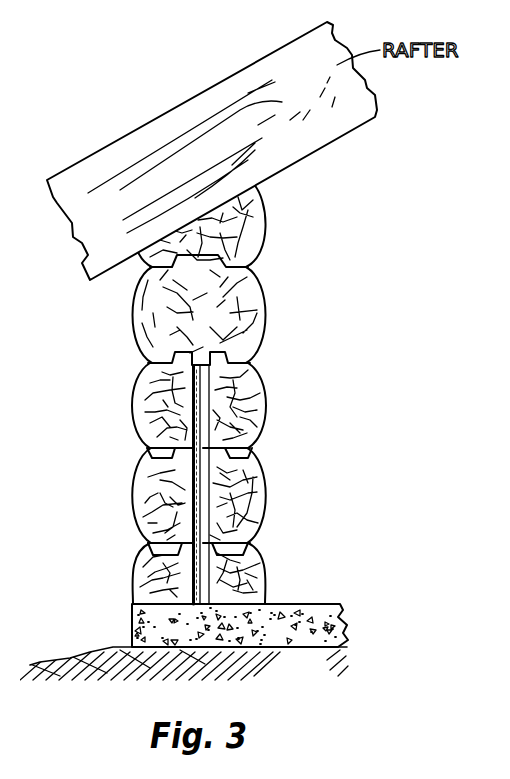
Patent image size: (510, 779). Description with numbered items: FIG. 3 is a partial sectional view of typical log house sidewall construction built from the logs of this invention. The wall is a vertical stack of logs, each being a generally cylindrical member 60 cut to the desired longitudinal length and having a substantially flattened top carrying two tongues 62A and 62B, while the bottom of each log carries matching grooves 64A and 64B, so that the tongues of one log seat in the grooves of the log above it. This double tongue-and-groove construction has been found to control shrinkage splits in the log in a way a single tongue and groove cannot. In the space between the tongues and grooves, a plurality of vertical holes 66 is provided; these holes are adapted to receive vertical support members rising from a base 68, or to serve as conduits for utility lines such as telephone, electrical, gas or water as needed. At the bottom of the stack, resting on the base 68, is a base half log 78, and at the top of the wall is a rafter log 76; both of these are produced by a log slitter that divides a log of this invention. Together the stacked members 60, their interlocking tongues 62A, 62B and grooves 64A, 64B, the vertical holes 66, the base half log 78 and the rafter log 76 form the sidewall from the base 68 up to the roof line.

The generally cylindrical member 60 is at (267, 510).
The tongue 62A is at (145, 449).
The tongue 62B is at (257, 448).
The groove 64A is at (148, 544).
The groove 64B is at (247, 543).
The vertical holes 66 is at (205, 373).
The base 68 is at (303, 635).
The rafter log 76 is at (267, 212).
The base half log 78 is at (263, 592).